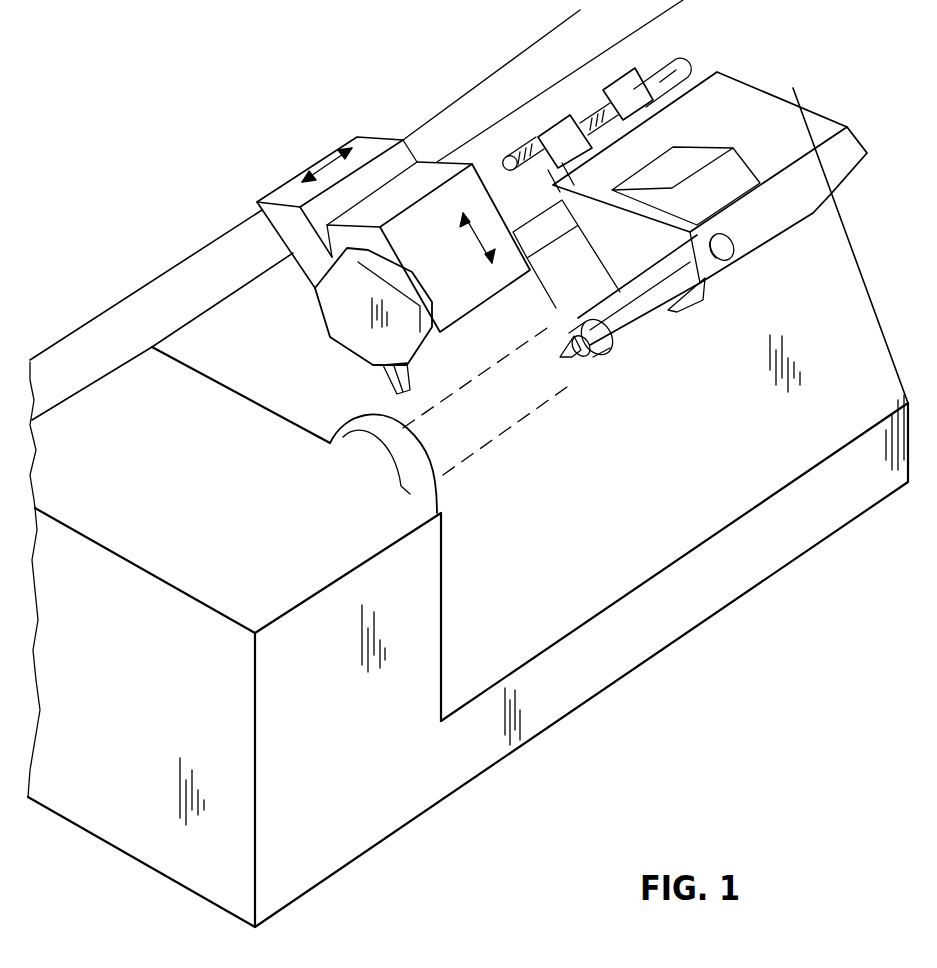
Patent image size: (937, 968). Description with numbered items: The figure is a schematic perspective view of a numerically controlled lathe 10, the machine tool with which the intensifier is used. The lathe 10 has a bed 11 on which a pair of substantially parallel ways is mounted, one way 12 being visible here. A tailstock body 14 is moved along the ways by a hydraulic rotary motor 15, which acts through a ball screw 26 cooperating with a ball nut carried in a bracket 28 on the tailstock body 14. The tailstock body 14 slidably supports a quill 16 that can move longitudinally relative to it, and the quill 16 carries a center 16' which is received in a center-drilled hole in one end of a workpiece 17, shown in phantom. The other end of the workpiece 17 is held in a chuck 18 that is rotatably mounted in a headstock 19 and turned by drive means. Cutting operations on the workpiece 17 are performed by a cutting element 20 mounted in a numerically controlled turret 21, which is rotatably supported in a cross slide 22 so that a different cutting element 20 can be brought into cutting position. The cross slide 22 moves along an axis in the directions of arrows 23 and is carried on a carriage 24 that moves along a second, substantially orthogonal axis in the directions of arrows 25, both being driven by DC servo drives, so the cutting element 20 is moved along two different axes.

The numerically controlled lathe 10 is at (562, 754).
The bed 11 is at (608, 688).
The way 12 is at (528, 220).
The tailstock body 14 is at (835, 117).
The hydraulic rotary motor 15 is at (673, 60).
The quill 16 is at (634, 300).
The center 16' is at (590, 371).
The workpiece 17 is at (480, 370).
The chuck 18 is at (438, 487).
The headstock 19 is at (443, 611).
The cutting element 20 is at (388, 378).
The numerically controlled turret 21 is at (340, 318).
The cross slide 22 is at (420, 161).
The arrows 23 is at (463, 213).
The carriage 24 is at (266, 235).
The arrows 25 is at (306, 180).
The ball screw 26 is at (521, 157).
The bracket 28 is at (555, 146).